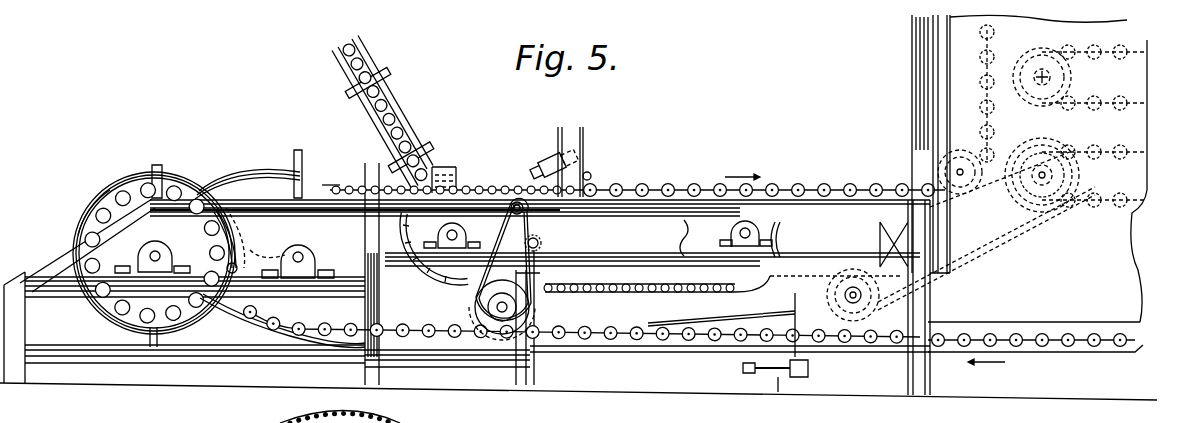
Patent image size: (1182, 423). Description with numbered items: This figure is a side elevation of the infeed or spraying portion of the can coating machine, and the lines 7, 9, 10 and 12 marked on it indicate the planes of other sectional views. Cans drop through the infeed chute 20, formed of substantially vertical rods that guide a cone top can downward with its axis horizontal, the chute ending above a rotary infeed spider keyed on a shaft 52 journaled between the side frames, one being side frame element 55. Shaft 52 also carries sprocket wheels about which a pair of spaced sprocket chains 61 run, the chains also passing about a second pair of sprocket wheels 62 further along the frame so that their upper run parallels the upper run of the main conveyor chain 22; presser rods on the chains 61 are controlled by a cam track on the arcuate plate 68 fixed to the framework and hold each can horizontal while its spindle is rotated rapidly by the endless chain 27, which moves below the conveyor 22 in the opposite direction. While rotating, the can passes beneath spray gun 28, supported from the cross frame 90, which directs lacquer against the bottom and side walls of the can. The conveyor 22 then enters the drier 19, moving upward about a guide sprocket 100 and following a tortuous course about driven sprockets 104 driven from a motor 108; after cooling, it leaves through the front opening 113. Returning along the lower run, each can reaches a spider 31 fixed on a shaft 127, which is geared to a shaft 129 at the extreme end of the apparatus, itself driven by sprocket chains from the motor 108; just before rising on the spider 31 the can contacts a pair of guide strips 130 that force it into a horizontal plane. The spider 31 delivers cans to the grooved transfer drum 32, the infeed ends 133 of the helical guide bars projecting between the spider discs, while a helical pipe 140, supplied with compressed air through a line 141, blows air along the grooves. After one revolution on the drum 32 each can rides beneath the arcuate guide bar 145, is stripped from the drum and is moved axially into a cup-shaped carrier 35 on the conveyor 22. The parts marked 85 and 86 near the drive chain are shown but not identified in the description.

The section line 7- 7 is at (170, 222).
The section line 9- 9 is at (48, 375).
The section line 10- 10 is at (310, 395).
The section line 12- 12 is at (455, 402).
The drier 19 is at (916, 90).
The infeed chute 20 is at (372, 70).
The main conveyor 22 is at (862, 189).
The endless chain 27 is at (468, 222).
The spray gun 28 is at (590, 172).
The spider 31 is at (275, 235).
The transfer drum 32 is at (130, 190).
The cup-shaped carriers 35 is at (331, 182).
The shaft 52 is at (452, 243).
The side frame element 55 is at (794, 210).
The sprocket chains 61 is at (643, 186).
The second pair of sprocket wheels 62 is at (775, 230).
The arcuate plate 68 is at (425, 237).
The lower chain 85 is at (536, 308).
The drive chain 86 is at (530, 214).
The cross frame 90 is at (568, 130).
The guide sprocket 100 is at (957, 165).
The driven sprockets 104 is at (1058, 82).
The motor 108 is at (810, 298).
The front opening 113 is at (933, 320).
The shaft 127 is at (300, 257).
The shaft 129 is at (150, 257).
The guide strips 130 is at (275, 352).
The infeed ends 133 is at (268, 251).
The pipe 140 is at (96, 203).
The line 141 is at (230, 268).
The arcuate guide bar 145 is at (275, 178).